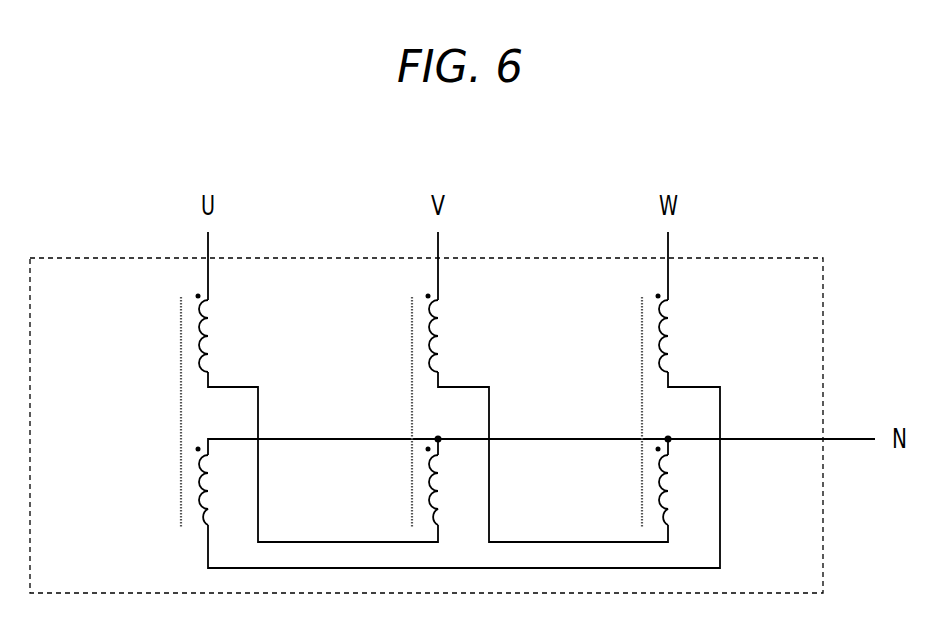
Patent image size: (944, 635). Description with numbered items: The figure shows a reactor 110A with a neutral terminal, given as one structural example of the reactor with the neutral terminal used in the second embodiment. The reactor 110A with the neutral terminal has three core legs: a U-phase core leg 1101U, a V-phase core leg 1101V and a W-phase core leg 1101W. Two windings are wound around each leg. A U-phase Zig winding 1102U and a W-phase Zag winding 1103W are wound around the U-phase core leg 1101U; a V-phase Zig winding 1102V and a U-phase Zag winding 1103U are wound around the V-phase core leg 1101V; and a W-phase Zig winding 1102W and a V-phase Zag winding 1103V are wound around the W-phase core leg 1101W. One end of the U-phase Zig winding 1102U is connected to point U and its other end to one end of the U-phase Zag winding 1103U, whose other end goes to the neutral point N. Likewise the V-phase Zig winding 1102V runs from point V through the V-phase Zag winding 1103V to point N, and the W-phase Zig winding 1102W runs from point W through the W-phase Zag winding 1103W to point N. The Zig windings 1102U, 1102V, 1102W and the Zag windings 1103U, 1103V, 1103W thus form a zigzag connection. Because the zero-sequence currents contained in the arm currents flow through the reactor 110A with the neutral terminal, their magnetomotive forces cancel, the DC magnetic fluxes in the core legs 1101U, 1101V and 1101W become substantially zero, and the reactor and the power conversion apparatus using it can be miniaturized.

The reactor with neutral terminal 110A is at (258, 257).
The U-phase core leg 1101U is at (178, 411).
The V-phase core leg 1101V is at (410, 411).
The W-phase core leg 1101W is at (640, 411).
The U-phase Zig winding 1102U is at (212, 335).
The V-phase Zig winding 1102V is at (442, 336).
The W-phase Zig winding 1102W is at (672, 336).
The U-phase Zag winding 1103U is at (442, 488).
The V-phase Zag winding 1103V is at (672, 488).
The W-phase Zag winding 1103W is at (212, 488).